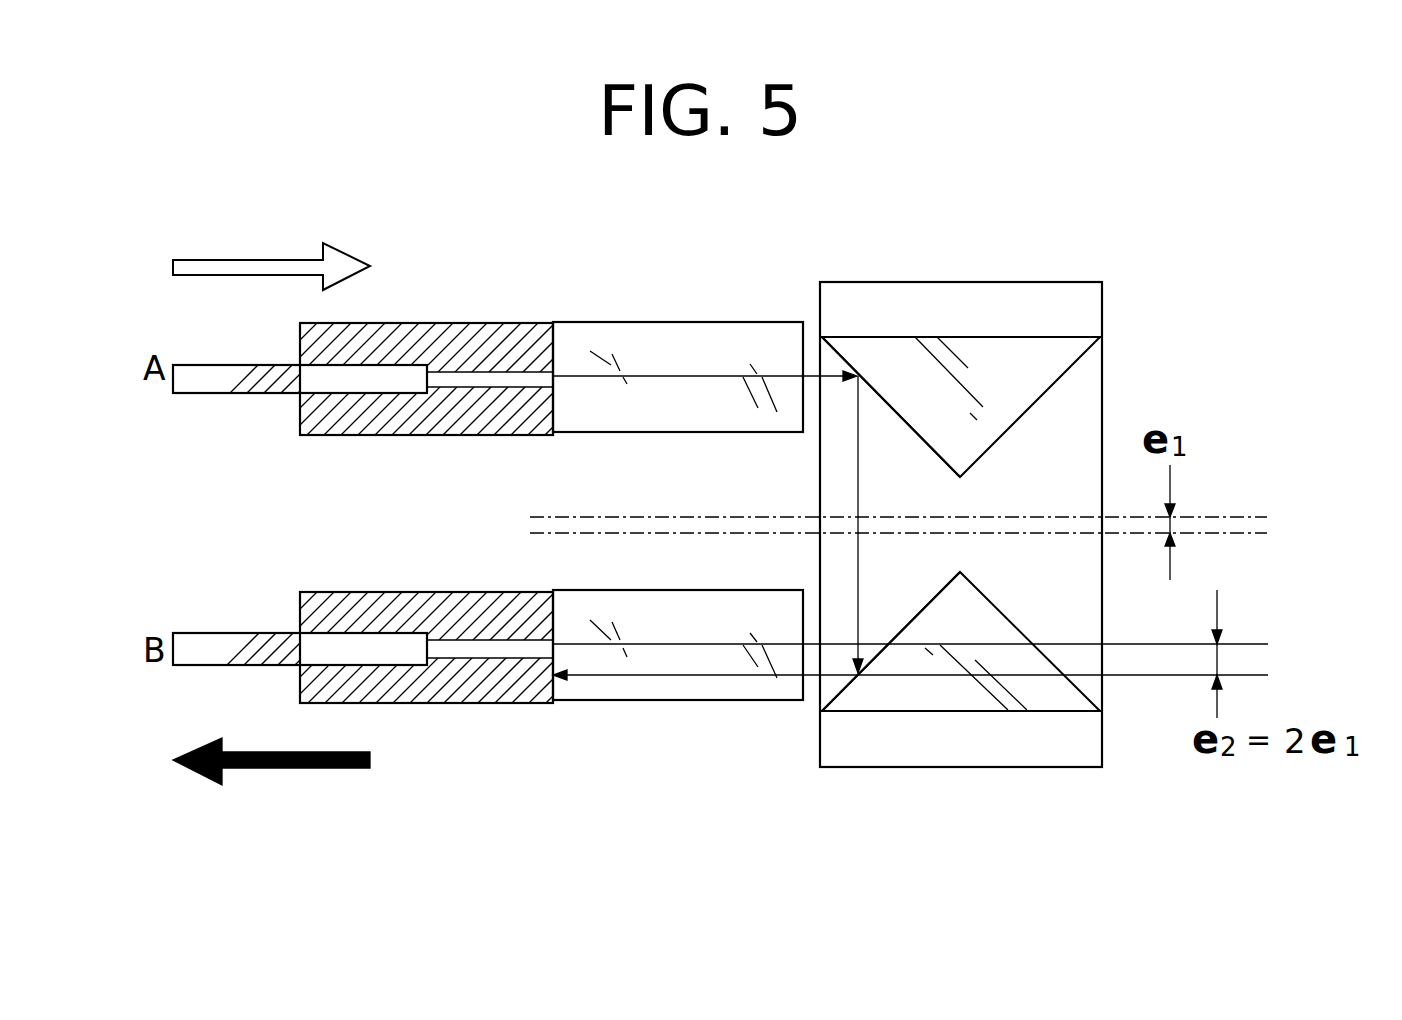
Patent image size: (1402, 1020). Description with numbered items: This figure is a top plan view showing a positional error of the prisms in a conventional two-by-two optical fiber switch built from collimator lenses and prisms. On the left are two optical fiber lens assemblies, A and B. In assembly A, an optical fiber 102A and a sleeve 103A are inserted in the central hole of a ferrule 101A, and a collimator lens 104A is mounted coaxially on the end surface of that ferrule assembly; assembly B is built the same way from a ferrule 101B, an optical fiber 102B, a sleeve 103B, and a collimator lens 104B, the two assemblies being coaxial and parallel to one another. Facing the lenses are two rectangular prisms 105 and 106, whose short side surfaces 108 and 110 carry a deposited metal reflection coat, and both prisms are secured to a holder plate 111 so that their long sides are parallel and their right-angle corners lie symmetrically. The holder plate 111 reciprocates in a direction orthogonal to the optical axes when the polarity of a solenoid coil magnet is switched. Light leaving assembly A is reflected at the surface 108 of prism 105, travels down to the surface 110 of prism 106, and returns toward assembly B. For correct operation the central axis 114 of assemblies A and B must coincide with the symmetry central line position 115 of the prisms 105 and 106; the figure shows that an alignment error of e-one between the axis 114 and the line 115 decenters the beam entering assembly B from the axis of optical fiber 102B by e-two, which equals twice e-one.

The ferrule 101A is at (508, 340).
The optical fiber 102A is at (492, 375).
The sleeve 103A is at (195, 385).
The collimator lens 104A is at (753, 340).
The ferrule 101B is at (438, 680).
The optical fiber 102B is at (473, 645).
The sleeve 103B is at (240, 648).
The collimator lens 104B is at (668, 688).
The rectangular prism 105 is at (968, 347).
The rectangular prism 106 is at (965, 692).
The short side surface 108 is at (912, 427).
The short side surface 110 is at (920, 613).
The holder plate 111 is at (1102, 298).
The central axis 114 is at (1245, 513).
The symmetry central line position 115 is at (1247, 532).